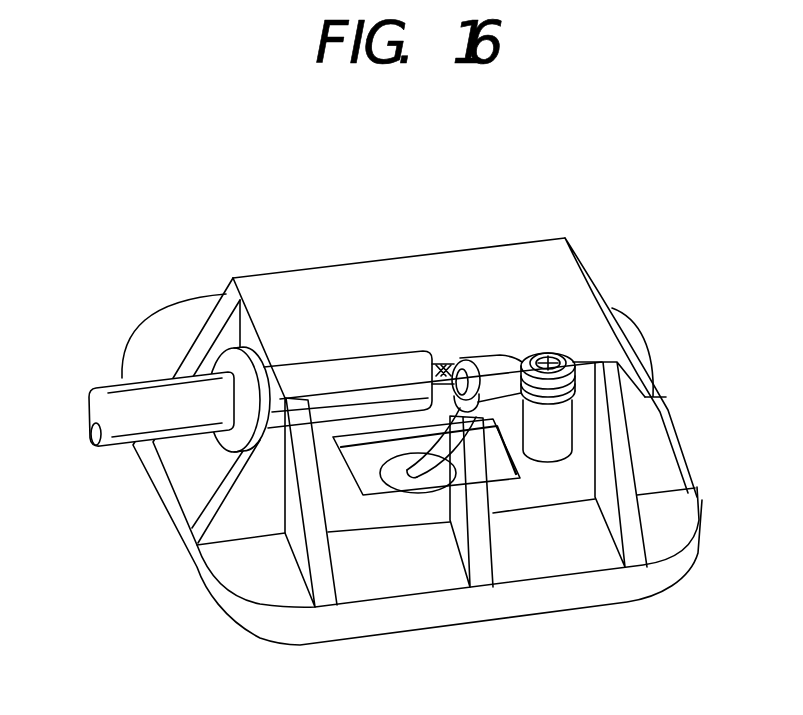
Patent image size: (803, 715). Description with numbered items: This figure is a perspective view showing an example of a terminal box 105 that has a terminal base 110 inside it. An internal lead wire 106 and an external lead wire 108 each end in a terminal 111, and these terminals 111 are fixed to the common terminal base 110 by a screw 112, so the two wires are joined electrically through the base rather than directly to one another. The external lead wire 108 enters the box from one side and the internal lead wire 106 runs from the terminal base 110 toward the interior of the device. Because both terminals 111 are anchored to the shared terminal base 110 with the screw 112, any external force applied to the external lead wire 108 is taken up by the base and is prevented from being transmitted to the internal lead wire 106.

The terminal box 105 is at (417, 258).
The internal lead wire 106 is at (414, 477).
The external lead wire 108 is at (110, 393).
The terminal base 110 is at (563, 438).
The terminal 111 is at (490, 357).
The screw 112 is at (560, 357).